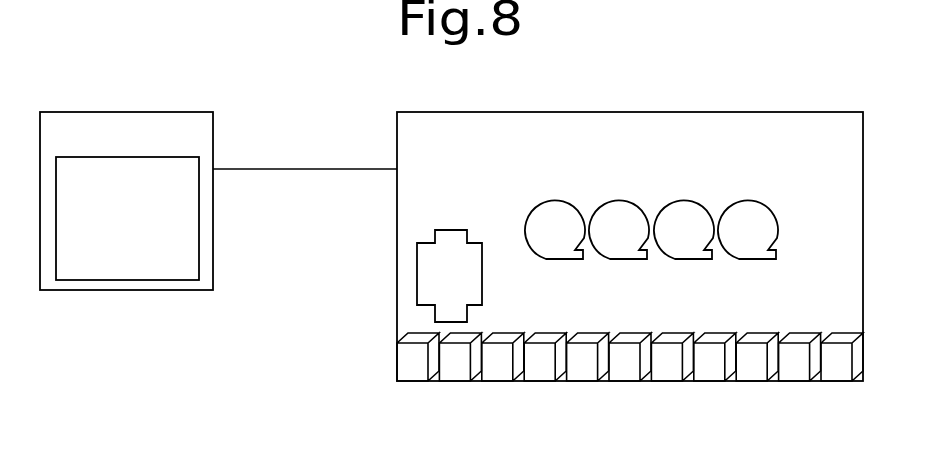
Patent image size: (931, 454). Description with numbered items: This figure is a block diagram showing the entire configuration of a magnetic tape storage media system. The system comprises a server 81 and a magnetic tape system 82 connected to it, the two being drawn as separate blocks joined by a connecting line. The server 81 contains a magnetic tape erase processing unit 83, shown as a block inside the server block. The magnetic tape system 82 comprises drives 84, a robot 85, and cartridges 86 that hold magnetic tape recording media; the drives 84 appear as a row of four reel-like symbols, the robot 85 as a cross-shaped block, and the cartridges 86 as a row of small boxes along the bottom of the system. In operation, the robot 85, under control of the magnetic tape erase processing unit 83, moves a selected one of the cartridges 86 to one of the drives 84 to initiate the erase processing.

The server 81 is at (156, 112).
The magnetic tape system 82 is at (675, 111).
The magnetic tape erase processing unit 83 is at (202, 163).
The drives 84 is at (788, 203).
The robot 85 is at (457, 230).
The cartridges 86 is at (863, 385).